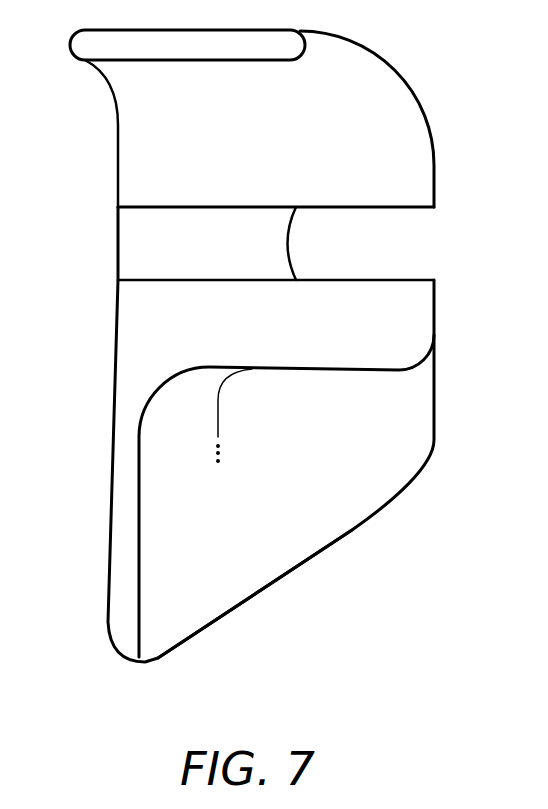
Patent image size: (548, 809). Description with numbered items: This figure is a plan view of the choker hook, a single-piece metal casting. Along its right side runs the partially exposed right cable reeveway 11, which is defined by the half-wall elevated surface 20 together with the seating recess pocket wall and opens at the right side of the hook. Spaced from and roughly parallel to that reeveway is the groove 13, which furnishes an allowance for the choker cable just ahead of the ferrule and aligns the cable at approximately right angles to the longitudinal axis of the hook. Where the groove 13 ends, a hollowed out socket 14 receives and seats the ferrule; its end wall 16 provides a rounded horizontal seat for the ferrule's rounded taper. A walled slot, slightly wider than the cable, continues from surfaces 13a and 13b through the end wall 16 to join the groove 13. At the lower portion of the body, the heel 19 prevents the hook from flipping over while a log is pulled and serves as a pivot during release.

The right cable reeveway 11 is at (437, 338).
The groove 13 is at (170, 248).
The surface 13a is at (288, 325).
The surface 13b is at (287, 188).
The hollowed out socket 14 is at (355, 252).
The end wall 16 is at (298, 232).
The heel 19 is at (285, 580).
The half-wall elevated surface 20 is at (311, 474).